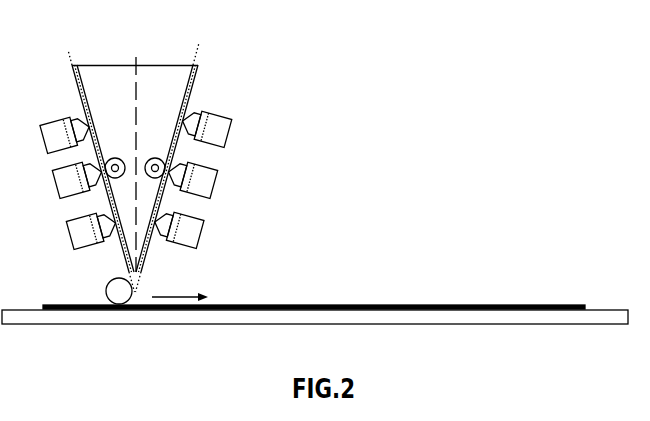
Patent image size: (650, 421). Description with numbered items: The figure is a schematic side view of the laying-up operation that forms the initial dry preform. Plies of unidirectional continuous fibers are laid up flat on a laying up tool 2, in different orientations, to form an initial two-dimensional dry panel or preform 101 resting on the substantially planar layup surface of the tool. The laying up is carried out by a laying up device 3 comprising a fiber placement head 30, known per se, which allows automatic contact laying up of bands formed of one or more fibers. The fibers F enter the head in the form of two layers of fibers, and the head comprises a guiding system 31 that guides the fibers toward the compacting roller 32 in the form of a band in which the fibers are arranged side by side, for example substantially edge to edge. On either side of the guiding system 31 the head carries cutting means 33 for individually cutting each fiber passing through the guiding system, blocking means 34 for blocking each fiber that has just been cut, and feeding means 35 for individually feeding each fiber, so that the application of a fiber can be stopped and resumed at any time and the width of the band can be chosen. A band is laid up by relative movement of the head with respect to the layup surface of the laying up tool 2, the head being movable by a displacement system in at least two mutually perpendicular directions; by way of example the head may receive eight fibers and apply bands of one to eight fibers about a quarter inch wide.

The laying up tool 2 is at (617, 310).
The laying up device 3 is at (71, 93).
The fiber placement head 30 is at (165, 67).
The guiding system 31 is at (108, 75).
The compacting roller 32 is at (107, 286).
The cutting means 33 is at (200, 231).
The blocking means 34 is at (226, 132).
The feeding means 35 is at (213, 185).
The initial two-dimensional dry panel or preform 101 is at (428, 296).
The fibers F is at (70, 51).